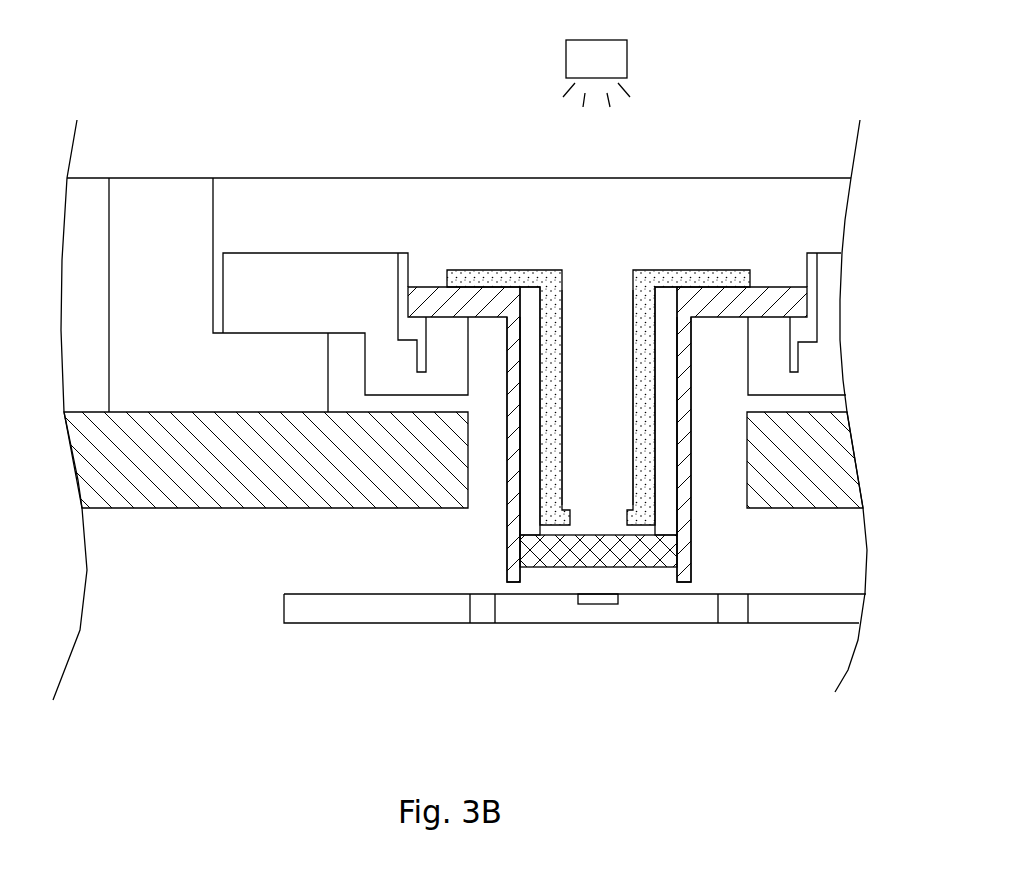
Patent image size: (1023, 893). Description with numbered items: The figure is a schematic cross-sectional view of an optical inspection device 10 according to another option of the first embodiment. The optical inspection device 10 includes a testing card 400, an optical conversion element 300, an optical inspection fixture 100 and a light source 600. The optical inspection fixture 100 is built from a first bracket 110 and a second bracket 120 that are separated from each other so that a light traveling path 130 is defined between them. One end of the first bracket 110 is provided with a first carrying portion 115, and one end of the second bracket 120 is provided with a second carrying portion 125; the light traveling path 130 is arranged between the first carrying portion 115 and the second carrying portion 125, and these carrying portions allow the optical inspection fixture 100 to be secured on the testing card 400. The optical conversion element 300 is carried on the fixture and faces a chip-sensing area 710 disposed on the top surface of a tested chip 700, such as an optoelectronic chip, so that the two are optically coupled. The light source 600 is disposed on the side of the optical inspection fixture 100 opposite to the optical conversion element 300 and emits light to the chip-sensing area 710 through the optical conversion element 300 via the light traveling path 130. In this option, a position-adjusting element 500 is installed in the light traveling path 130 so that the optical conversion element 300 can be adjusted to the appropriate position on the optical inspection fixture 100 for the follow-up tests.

The optical inspection device 10 is at (50, 56).
The optical inspection fixture 100 is at (430, 275).
The first bracket 110 is at (500, 540).
The first carrying portion 115 is at (470, 303).
The second bracket 120 is at (705, 539).
The second carrying portion 125 is at (780, 303).
The light traveling path 130 is at (601, 302).
The optical conversion element 300 is at (647, 567).
The testing card 400 is at (798, 458).
The position-adjusting element 500 is at (690, 277).
The light source 600 is at (602, 65).
The tested chip 700 is at (558, 607).
The chip-sensing area 710 is at (597, 605).